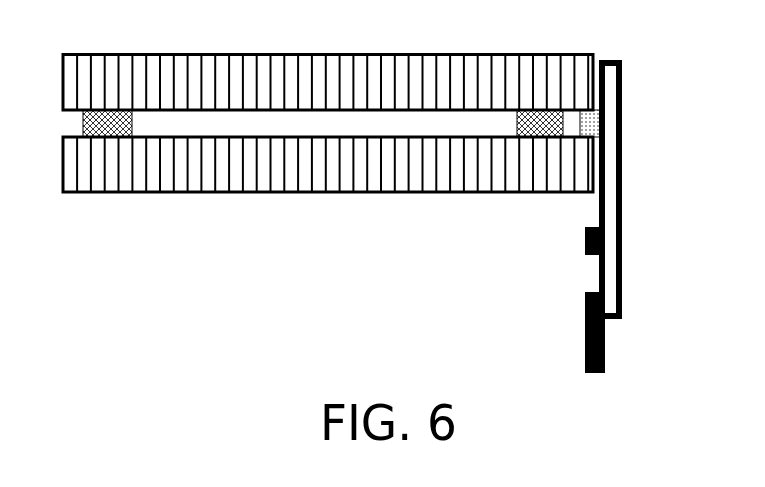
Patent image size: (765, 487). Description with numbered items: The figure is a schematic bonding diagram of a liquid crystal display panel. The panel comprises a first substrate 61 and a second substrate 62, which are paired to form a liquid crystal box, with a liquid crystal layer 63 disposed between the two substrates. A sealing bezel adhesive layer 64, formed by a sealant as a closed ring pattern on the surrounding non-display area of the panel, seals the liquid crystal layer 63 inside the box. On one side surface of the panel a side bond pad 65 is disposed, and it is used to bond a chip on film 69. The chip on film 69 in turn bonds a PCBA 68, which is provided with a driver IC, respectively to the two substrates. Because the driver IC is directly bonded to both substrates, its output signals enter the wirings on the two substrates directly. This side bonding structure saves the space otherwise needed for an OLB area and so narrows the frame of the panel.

The first substrate 61 is at (290, 78).
The second substrate 62 is at (285, 189).
The liquid crystal layer 63 is at (338, 123).
The sealing bezel adhesive layer 64 is at (532, 112).
The side bond pad 65 is at (592, 116).
The PCBA 68 is at (585, 318).
The chip on film 69 is at (620, 198).